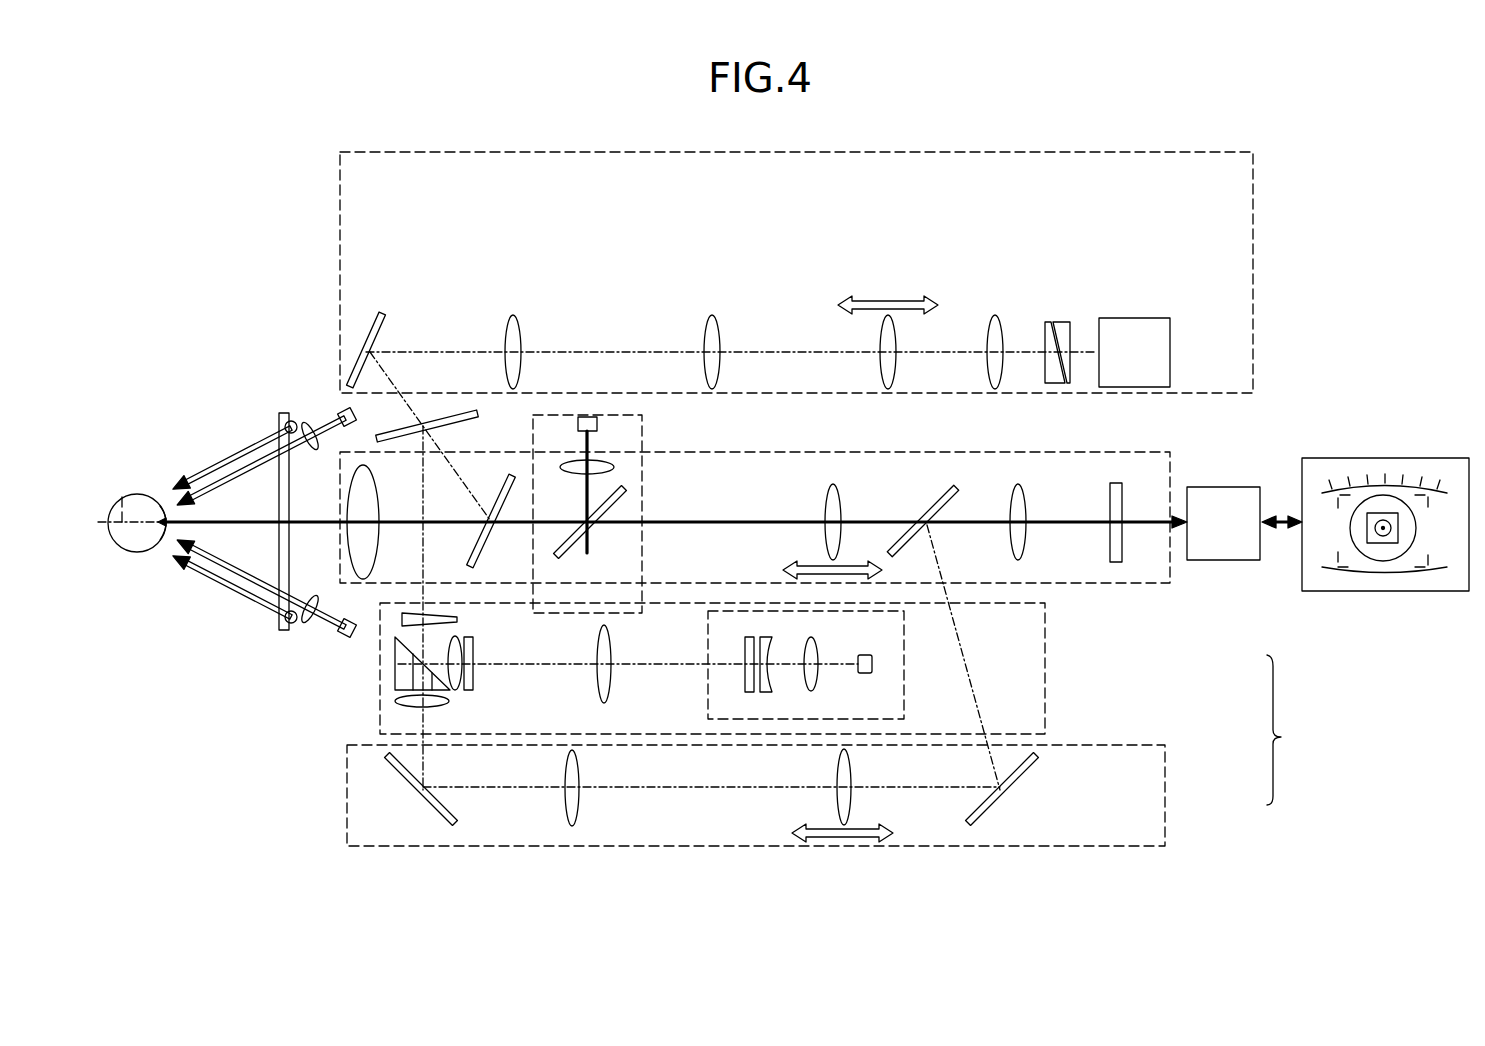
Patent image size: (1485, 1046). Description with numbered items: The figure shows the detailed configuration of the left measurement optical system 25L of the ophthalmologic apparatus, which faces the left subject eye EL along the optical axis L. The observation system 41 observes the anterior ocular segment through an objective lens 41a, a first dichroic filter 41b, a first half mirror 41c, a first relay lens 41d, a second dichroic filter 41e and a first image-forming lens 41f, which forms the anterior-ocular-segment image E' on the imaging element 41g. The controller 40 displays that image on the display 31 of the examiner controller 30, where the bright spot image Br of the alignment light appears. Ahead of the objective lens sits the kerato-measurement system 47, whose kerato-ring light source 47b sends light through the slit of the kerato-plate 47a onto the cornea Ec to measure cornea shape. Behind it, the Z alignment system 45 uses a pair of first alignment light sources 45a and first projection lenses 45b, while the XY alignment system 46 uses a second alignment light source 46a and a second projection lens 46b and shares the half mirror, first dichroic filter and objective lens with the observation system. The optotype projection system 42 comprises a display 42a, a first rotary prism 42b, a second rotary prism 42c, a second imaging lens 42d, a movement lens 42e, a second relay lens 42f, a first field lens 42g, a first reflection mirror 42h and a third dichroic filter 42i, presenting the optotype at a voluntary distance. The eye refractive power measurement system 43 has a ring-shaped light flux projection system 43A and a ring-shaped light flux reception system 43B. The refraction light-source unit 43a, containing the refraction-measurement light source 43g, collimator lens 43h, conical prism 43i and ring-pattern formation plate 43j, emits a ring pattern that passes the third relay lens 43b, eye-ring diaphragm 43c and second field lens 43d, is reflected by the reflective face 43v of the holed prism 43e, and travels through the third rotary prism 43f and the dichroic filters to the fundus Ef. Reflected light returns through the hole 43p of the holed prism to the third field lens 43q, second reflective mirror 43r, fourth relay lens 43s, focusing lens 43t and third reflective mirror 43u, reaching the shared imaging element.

The left measurement optical system 25L is at (1198, 120).
The optotype projection system 42 is at (340, 190).
The display 42a is at (1127, 318).
The first rotary prism 42b is at (1062, 322).
The second rotary prism 42c is at (1044, 345).
The second imaging lens 42d is at (995, 316).
The movement lens 42e is at (895, 350).
The second relay lens 42f is at (713, 316).
The first field lens 42g is at (513, 315).
The first reflection mirror 42h is at (374, 310).
The third dichroic filter 42i is at (424, 420).
The kerato-measurement system 47 is at (240, 400).
The kerato-plate 47a is at (278, 428).
The kerato-ring light source 47b is at (285, 422).
The Z alignment system 45 is at (312, 398).
The first alignment light source 45a is at (342, 409).
The first projection lens 45b is at (302, 428).
The left subject eye EL is at (138, 486).
The fundus Ef is at (121, 496).
The cornea Ec is at (167, 532).
The optical axis L is at (228, 528).
The observation system 41 is at (1170, 462).
The objective lens 41a is at (350, 478).
The first dichroic filter 41b is at (505, 476).
The first half mirror 41c is at (628, 498).
The first relay lens 41d is at (828, 498).
The second dichroic filter 41e is at (940, 492).
The first image-forming lens 41f is at (1023, 505).
The imaging element 41g is at (1122, 508).
The XY alignment system 46 is at (642, 474).
The second alignment light source 46a is at (597, 424).
The second projection lens 46b is at (606, 462).
The controller 40 is at (1226, 487).
The examiner controller 30 is at (1350, 450).
The display 31 is at (1398, 458).
The anterior-ocular-segment image E' is at (1445, 426).
The bright spot image Br is at (1383, 532).
The eye refractive power measurement system 43 is at (1288, 730).
The ring-shaped light flux projection system 43A is at (1047, 660).
The ring-shaped light flux reception system 43B is at (1165, 790).
The refraction light-source unit 43a is at (906, 670).
The third relay lens 43b is at (612, 676).
The eye-ring diaphragm 43c is at (462, 680).
The second field lens 43d is at (473, 644).
The holed prism 43e is at (397, 690).
The third rotary prism 43f is at (457, 620).
The refraction-measurement light source 43g is at (863, 655).
The collimator lens 43h is at (816, 676).
The conical prism 43i is at (768, 637).
The ring-pattern formation plate 43j is at (745, 691).
The hole 43p is at (393, 666).
The third field lens 43q is at (445, 706).
The second reflective mirror 43r is at (393, 770).
The fourth relay lens 43s is at (578, 806).
The focusing lens 43t is at (838, 802).
The third reflective mirror 43u is at (1000, 812).
The reflective face 43v is at (394, 638).